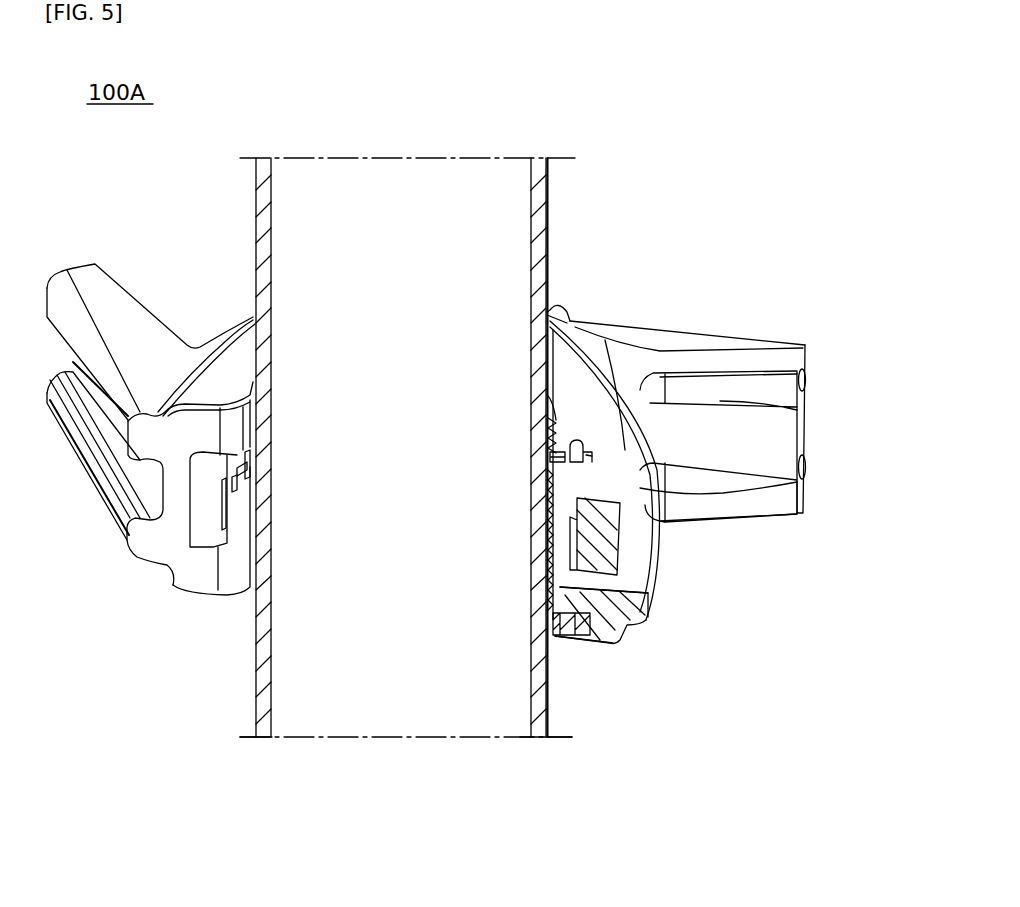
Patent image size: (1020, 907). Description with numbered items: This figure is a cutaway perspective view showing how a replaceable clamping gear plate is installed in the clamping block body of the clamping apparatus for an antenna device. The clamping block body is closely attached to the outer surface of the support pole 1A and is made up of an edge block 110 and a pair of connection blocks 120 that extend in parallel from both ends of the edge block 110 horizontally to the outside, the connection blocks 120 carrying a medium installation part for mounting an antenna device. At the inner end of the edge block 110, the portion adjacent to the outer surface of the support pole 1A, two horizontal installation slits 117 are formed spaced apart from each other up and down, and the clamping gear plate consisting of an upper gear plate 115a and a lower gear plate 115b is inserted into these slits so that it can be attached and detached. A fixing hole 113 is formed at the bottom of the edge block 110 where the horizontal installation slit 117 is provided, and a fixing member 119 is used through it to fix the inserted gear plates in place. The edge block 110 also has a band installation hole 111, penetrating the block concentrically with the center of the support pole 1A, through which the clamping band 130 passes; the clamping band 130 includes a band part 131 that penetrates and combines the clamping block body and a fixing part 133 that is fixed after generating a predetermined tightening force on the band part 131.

The support pole 1A is at (540, 218).
The edge block 110 is at (623, 438).
The band installation hole 111 is at (211, 511).
The fixing hole 113 is at (584, 440).
The upper gear plate 115a is at (553, 462).
The lower gear plate 115b is at (548, 620).
The horizontal installation slit 117 is at (567, 467).
The fixing member 119 is at (590, 450).
The connection block 120 is at (778, 510).
The clamping band 130 is at (738, 661).
The band part 131 is at (607, 630).
The fixing part 133 is at (620, 550).